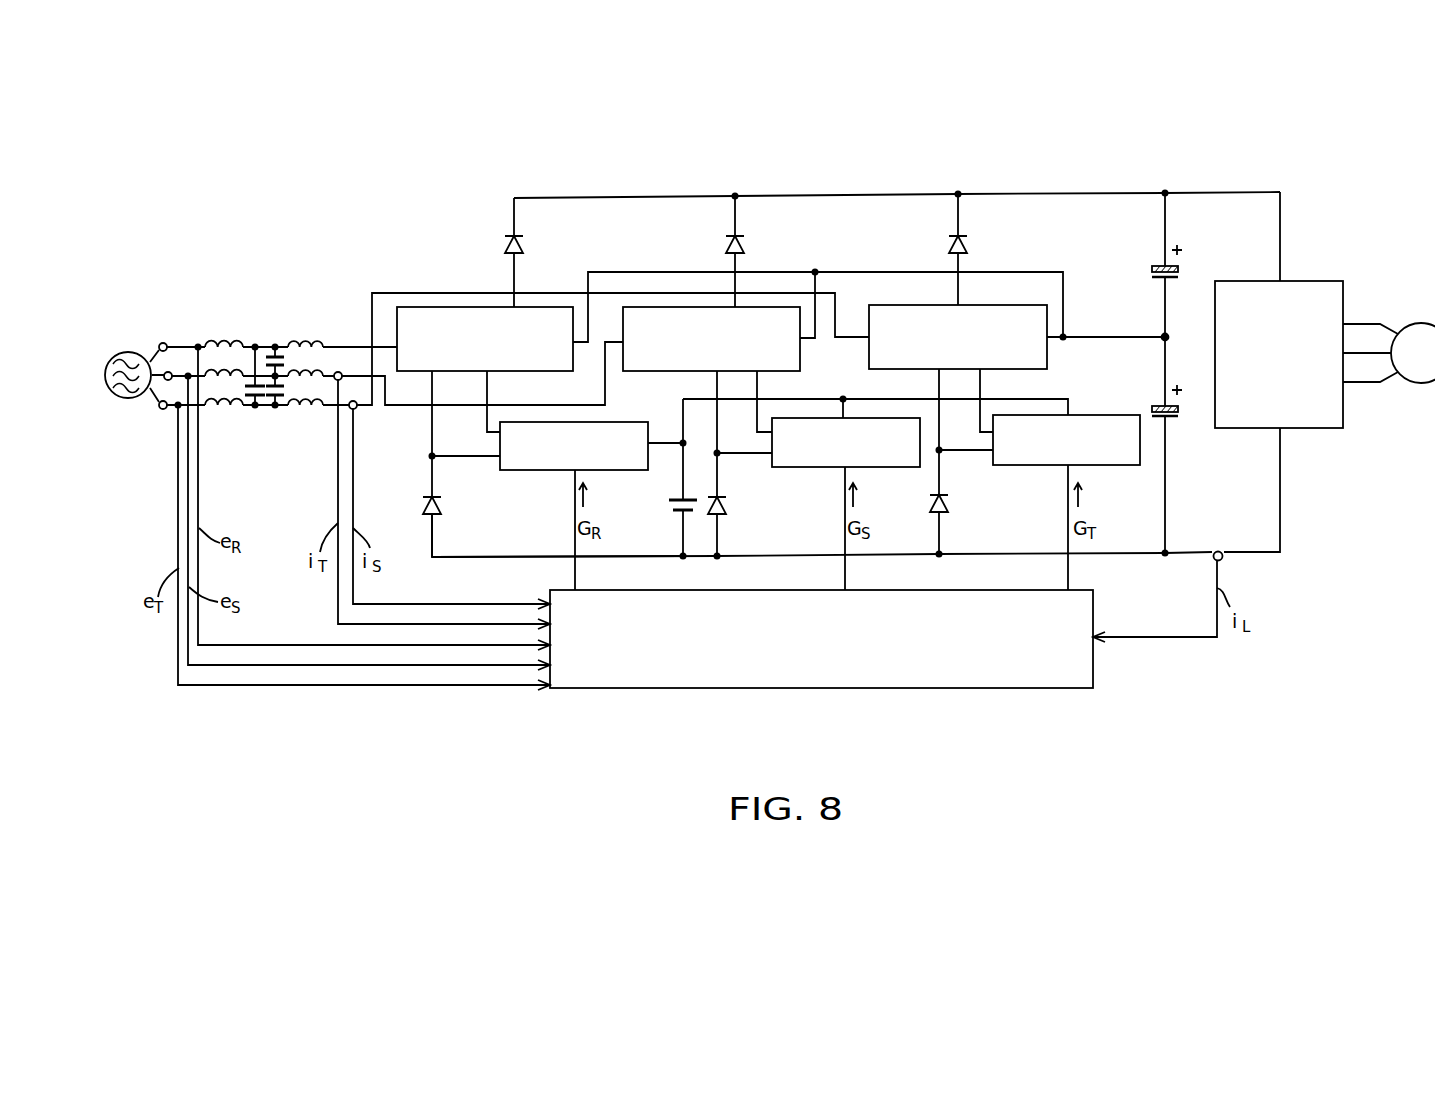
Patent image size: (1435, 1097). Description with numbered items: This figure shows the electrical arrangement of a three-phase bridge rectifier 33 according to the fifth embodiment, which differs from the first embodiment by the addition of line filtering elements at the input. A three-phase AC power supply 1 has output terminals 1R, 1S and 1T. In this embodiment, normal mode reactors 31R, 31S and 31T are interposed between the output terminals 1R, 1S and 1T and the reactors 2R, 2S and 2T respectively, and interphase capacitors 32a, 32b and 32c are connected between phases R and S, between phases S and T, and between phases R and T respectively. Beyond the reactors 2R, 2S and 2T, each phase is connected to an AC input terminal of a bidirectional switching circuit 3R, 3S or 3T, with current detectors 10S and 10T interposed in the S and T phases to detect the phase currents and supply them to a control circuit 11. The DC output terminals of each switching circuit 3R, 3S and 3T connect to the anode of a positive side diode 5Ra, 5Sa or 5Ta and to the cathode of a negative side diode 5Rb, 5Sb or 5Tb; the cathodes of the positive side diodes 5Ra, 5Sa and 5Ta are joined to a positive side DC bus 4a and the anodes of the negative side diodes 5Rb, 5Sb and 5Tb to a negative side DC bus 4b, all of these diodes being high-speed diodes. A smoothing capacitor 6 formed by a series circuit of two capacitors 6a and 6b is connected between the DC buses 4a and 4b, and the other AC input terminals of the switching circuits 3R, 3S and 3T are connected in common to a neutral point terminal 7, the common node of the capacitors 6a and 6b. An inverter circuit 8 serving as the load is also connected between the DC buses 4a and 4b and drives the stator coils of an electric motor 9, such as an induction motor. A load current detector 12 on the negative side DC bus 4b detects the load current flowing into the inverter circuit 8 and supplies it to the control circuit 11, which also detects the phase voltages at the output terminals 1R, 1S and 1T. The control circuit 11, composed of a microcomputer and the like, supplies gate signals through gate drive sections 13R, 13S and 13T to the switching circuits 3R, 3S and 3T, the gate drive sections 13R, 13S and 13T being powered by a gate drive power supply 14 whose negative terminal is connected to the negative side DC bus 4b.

The three-phase AC power supply 1 is at (130, 353).
The output terminal 1R is at (163, 342).
The output terminal 1S is at (170, 371).
The output terminal 1T is at (163, 410).
The normal mode reactor 31R is at (223, 341).
The normal mode reactor 31S is at (234, 370).
The normal mode reactor 31T is at (222, 411).
The interphase capacitor 32a is at (278, 352).
The interphase capacitor 32b is at (277, 407).
The interphase capacitor 32c is at (262, 408).
The reactor 2R is at (303, 341).
The reactor 2S is at (323, 370).
The reactor 2T is at (303, 411).
The current detector 10S is at (340, 370).
The current detector 10T is at (357, 410).
The bidirectional switching circuit 3R is at (430, 306).
The bidirectional switching circuit 3S is at (700, 306).
The bidirectional switching circuit 3T is at (912, 304).
The positive side diode 5Ra is at (500, 245).
The positive side diode 5Sa is at (748, 243).
The positive side diode 5Ta is at (993, 232).
The negative side diode 5Rb is at (424, 500).
The negative side diode 5Sb is at (728, 503).
The negative side diode 5Tb is at (950, 500).
The positive side DC bus 4a is at (588, 197).
The negative side DC bus 4b is at (475, 558).
The three-phase bridge rectifier 33 is at (847, 182).
The gate drive section 13R is at (540, 473).
The gate drive section 13S is at (877, 469).
The gate drive section 13T is at (1118, 467).
The gate drive power supply 14 is at (668, 504).
The smoothing capacitor 6 is at (1189, 305).
The capacitor 6a is at (1147, 270).
The capacitor 6b is at (1175, 414).
The neutral point terminal 7 is at (1163, 334).
The inverter circuit 8 is at (1314, 280).
The electric motor 9 is at (1418, 323).
The control circuit 11 is at (1095, 600).
The load current detector 12 is at (1222, 558).